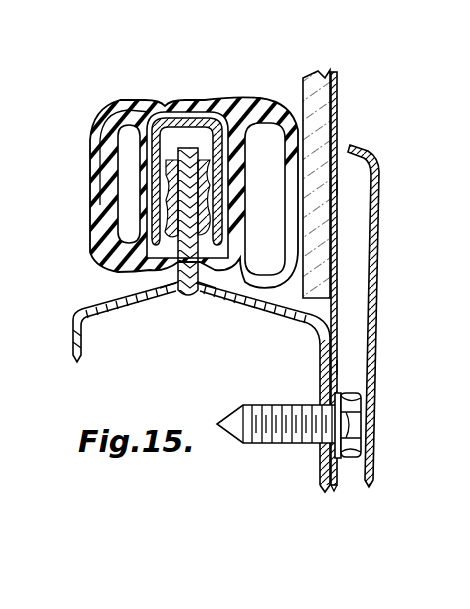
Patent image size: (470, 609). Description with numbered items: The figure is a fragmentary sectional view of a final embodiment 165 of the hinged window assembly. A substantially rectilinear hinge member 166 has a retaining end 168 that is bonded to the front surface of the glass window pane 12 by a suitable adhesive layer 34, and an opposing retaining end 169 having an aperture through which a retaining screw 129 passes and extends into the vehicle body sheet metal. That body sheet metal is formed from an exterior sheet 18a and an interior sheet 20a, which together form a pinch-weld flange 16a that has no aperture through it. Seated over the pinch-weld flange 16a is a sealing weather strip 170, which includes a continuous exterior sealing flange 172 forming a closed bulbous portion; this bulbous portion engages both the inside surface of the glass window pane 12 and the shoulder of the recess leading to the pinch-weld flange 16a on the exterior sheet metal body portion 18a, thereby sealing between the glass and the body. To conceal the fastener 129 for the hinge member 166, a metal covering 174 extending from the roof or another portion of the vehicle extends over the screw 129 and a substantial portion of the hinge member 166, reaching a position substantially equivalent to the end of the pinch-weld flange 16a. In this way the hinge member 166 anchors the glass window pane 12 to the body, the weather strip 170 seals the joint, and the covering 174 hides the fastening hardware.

The glass window pane 12 is at (303, 90).
The adhesive layer 34 is at (338, 88).
The hinged window assembly embodiment 165 is at (412, 100).
The hinge member 166 is at (350, 340).
The retaining end 168 is at (339, 187).
The opposing retaining end 169 is at (336, 367).
The sealing weather strip 170 is at (203, 100).
The continuous exterior sealing flange 172 is at (222, 296).
The metal covering 174 is at (379, 244).
The retaining screw 129 is at (296, 386).
The pinch-weld flange 16a is at (178, 156).
The exterior sheet 18a is at (276, 319).
The interior sheet 20a is at (82, 336).